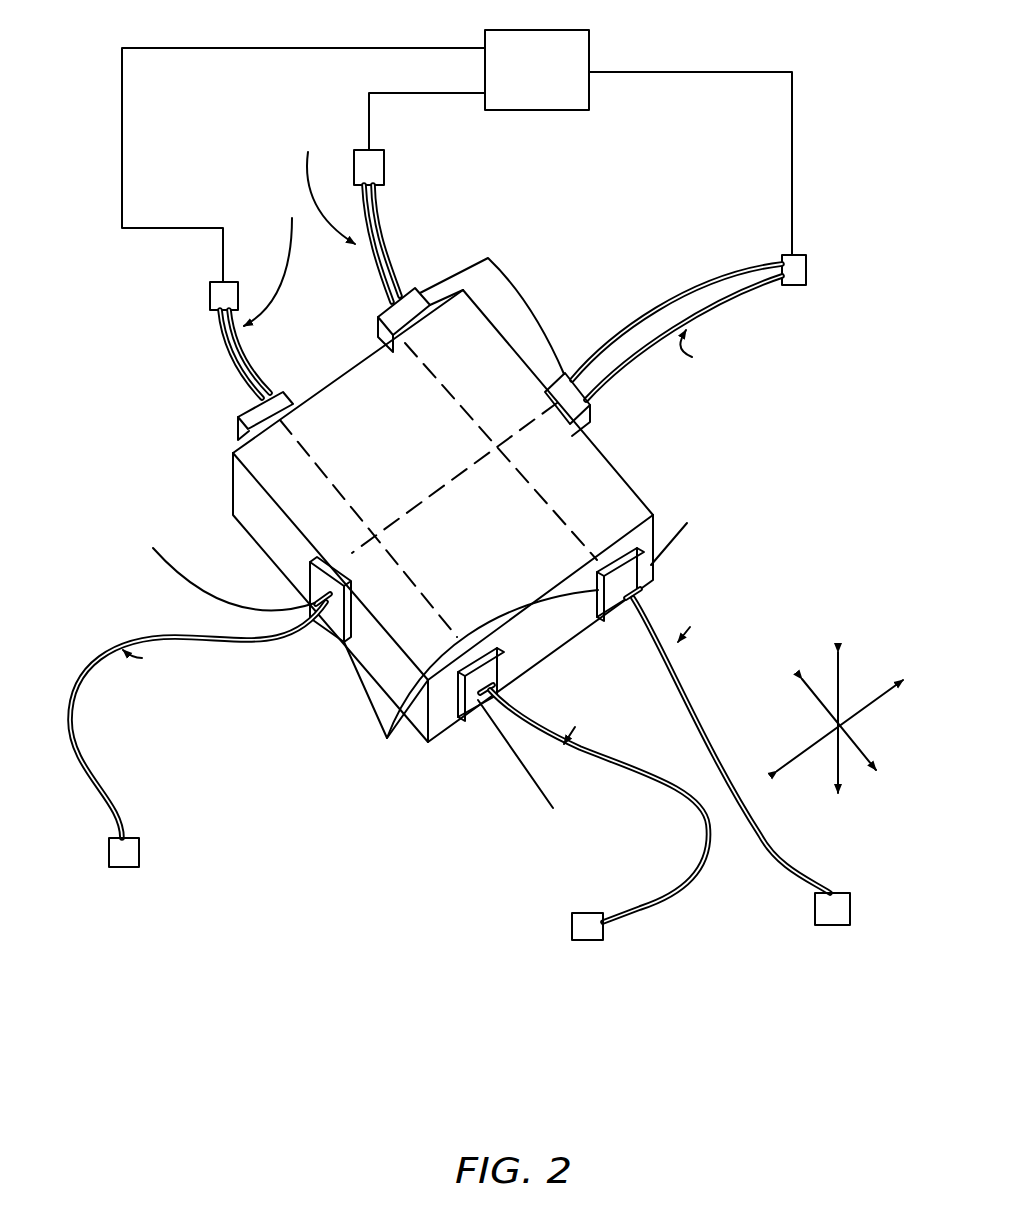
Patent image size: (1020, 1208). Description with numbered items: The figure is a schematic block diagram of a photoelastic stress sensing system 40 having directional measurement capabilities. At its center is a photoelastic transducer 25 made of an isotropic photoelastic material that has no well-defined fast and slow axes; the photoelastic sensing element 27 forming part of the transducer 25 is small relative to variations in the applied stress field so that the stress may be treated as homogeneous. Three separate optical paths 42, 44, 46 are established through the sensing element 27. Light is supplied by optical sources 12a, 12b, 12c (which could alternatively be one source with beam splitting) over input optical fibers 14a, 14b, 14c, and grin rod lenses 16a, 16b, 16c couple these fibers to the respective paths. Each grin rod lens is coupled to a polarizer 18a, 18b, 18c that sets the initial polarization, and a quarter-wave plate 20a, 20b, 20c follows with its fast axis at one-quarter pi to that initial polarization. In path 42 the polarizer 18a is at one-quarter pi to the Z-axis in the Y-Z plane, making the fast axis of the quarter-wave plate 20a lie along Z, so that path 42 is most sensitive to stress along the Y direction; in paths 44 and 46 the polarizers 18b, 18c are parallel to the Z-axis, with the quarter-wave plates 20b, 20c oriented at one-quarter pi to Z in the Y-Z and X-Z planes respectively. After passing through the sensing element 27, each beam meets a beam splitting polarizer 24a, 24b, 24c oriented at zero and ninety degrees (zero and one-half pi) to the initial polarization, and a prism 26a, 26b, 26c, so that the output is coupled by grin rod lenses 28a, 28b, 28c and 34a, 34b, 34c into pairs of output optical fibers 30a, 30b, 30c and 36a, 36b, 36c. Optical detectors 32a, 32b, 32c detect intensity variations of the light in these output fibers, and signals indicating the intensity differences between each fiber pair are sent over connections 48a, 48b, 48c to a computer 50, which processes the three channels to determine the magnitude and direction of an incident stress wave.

The optical source 12a is at (572, 926).
The optical source 12b is at (851, 922).
The optical source 12c is at (140, 857).
The optical fiber 14a is at (676, 902).
The optical fiber 14b is at (790, 870).
The optical fiber 14c is at (122, 826).
The grin rod lens 16a is at (498, 680).
The grin rod lens 16b is at (618, 612).
The grin rod lens 16c is at (322, 626).
The polarizer 18a is at (483, 697).
The polarizer 18b is at (634, 596).
The polarizer 18c is at (318, 598).
The quarter-wave plate 20a is at (462, 728).
The quarter-wave plate 20b is at (642, 548).
The quarter-wave plate 20c is at (318, 553).
The beam splitting polarizer 24a is at (216, 428).
The beam splitting polarizer 24b is at (433, 248).
The beam splitting polarizer 24c is at (603, 419).
The photoelastic transducer 25 is at (493, 500).
The prism 26a is at (247, 432).
The prism 26b is at (426, 290).
The prism 26c is at (590, 425).
The photoelastic sensing element 27 is at (635, 488).
The grin rod lens 28a is at (266, 398).
The grin rod lens 28b is at (398, 292).
The grin rod lens 28c is at (596, 400).
The optical fiber 30a is at (261, 351).
The optical fiber 30b is at (400, 240).
The optical fiber 30c is at (705, 310).
The optical detector 32a is at (224, 282).
The optical detector 32b is at (377, 152).
The optical detector 32c is at (808, 278).
The grin rod lens 34a is at (237, 418).
The grin rod lens 34b is at (378, 317).
The grin rod lens 34c is at (565, 372).
The optical fiber 36a is at (229, 354).
The optical fiber 36b is at (361, 206).
The optical fiber 36c is at (677, 326).
The photoelastic stress sensing system 40 is at (252, 968).
The optical path 42 is at (356, 510).
The optical path 44 is at (500, 425).
The optical path 46 is at (428, 500).
The connection 48a is at (122, 118).
The connection 48b is at (350, 99).
The connection 48c is at (793, 128).
The computer 50 is at (589, 32).